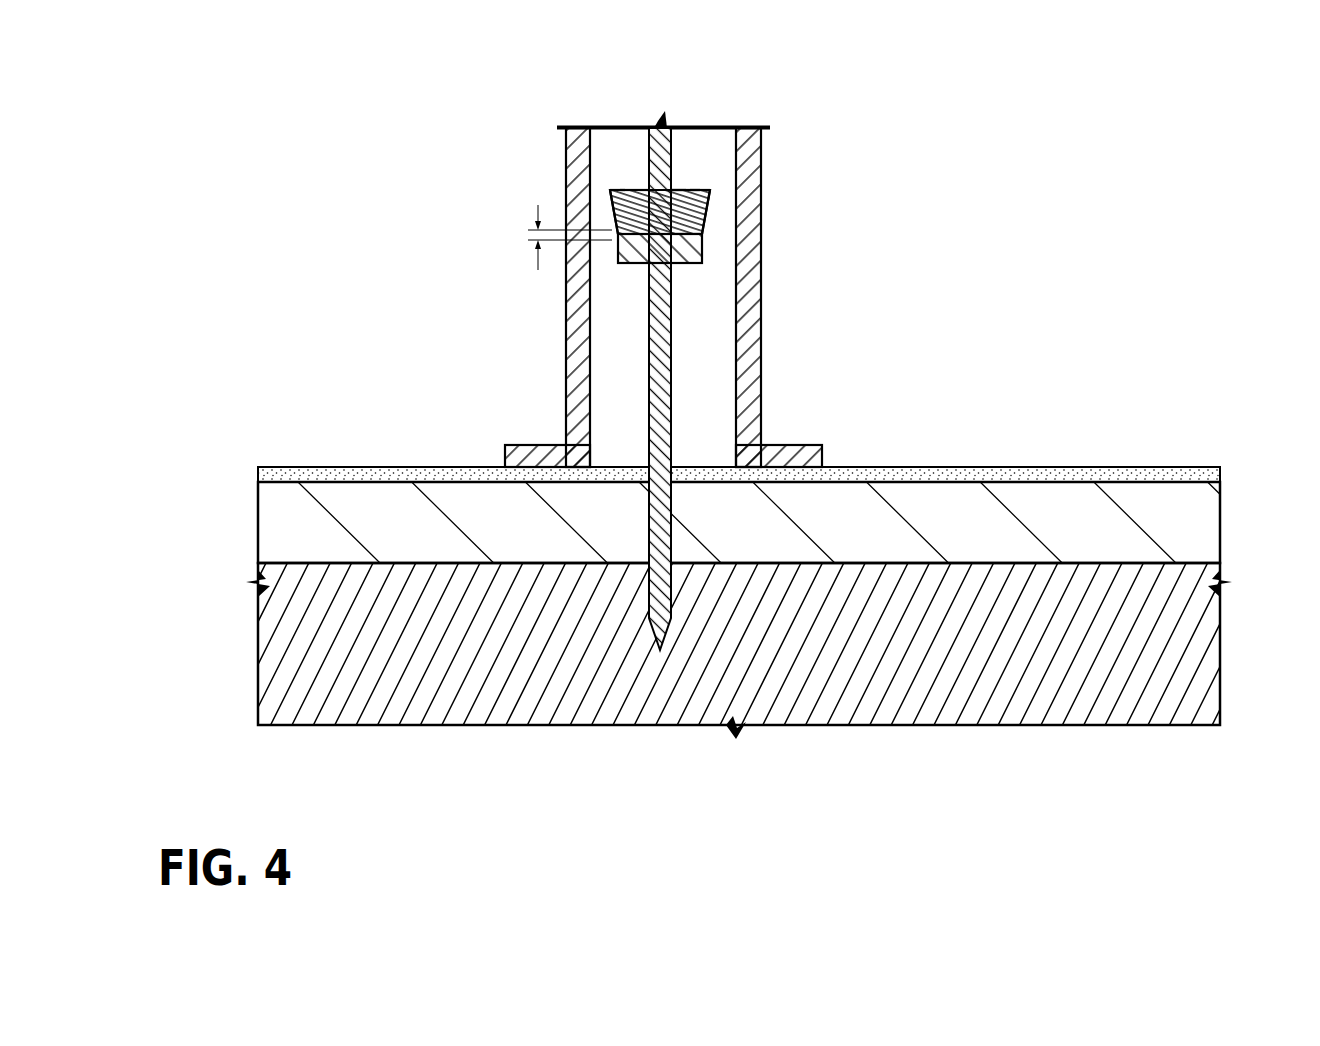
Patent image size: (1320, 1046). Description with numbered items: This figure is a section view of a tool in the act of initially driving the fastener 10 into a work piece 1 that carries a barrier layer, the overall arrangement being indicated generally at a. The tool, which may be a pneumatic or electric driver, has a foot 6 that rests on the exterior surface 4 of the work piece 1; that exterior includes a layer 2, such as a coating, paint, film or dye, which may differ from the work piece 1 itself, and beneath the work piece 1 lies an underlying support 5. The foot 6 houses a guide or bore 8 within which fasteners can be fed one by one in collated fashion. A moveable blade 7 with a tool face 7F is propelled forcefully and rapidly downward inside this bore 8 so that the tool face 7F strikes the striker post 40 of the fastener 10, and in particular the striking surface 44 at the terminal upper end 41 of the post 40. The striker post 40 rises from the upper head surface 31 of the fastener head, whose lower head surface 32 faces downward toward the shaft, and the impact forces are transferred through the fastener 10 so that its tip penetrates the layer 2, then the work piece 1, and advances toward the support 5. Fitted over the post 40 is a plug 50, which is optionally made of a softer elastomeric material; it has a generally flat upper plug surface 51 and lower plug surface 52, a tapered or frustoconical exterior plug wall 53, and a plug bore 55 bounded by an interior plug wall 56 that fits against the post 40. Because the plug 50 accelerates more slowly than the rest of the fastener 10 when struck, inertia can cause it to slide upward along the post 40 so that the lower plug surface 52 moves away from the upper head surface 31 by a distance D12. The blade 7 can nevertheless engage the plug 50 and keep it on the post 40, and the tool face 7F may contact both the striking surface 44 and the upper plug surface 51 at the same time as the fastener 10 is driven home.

The fastening assembly a is at (661, 341).
The work piece 1 is at (1018, 505).
The layer 2 is at (906, 466).
The exterior surface 4 is at (824, 466).
The underlying support 5 is at (990, 660).
The foot 6 is at (801, 444).
The blade 7 is at (666, 188).
The tool face 7F is at (653, 190).
The guide or bore 8 is at (702, 352).
The fastener 10 is at (625, 341).
The upper head surface 31 is at (703, 238).
The lower head surface 32 is at (678, 264).
The striker post 40 is at (612, 200).
The terminal upper end 41 is at (613, 193).
The striking surface 44 is at (643, 190).
The plug 50 is at (716, 197).
The upper plug surface 51 is at (710, 190).
The lower plug surface 52 is at (704, 231).
The exterior plug wall 53 is at (705, 213).
The plug bore 55 is at (696, 185).
The interior plug wall 56 is at (680, 187).
The distance D12 is at (562, 253).